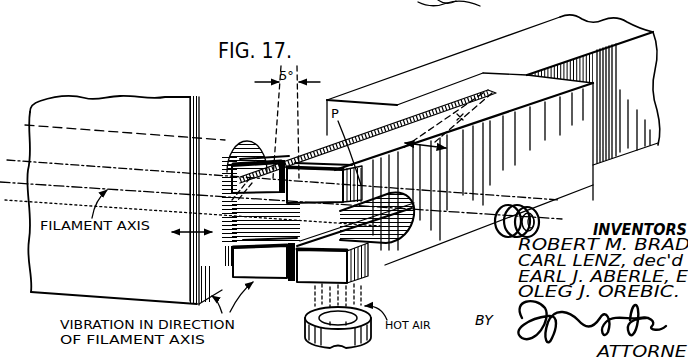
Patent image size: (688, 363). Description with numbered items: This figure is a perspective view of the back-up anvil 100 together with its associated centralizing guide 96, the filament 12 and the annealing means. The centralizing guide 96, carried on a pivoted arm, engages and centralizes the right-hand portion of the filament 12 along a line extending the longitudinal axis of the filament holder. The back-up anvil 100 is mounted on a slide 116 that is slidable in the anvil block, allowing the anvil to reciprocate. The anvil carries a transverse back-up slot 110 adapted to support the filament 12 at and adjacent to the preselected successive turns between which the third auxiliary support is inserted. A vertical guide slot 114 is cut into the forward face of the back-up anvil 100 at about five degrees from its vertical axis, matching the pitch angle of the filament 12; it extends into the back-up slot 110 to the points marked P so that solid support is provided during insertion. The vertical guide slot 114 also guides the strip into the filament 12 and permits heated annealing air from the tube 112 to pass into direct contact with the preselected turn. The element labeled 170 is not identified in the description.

The filament 12 is at (540, 222).
The centralizing guide 96 is at (154, 108).
The back-up anvil 100 is at (593, 187).
The transverse back-up slot 110 is at (386, 222).
The tube 112 is at (312, 348).
The vertical guide slot 114 is at (447, 100).
The slide 116 is at (590, 33).
The rail 170 is at (370, 74).